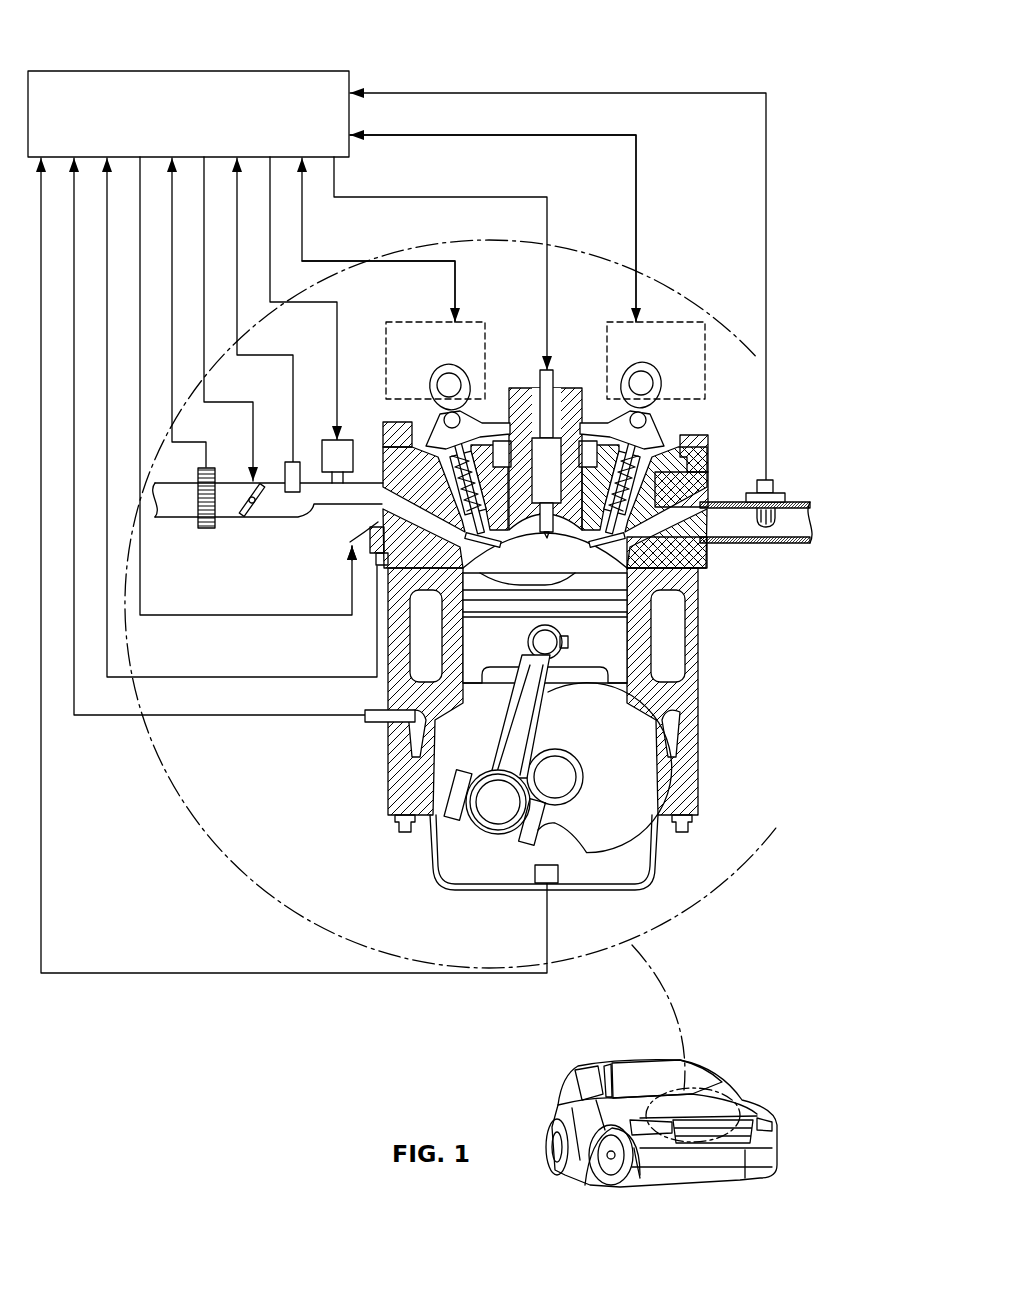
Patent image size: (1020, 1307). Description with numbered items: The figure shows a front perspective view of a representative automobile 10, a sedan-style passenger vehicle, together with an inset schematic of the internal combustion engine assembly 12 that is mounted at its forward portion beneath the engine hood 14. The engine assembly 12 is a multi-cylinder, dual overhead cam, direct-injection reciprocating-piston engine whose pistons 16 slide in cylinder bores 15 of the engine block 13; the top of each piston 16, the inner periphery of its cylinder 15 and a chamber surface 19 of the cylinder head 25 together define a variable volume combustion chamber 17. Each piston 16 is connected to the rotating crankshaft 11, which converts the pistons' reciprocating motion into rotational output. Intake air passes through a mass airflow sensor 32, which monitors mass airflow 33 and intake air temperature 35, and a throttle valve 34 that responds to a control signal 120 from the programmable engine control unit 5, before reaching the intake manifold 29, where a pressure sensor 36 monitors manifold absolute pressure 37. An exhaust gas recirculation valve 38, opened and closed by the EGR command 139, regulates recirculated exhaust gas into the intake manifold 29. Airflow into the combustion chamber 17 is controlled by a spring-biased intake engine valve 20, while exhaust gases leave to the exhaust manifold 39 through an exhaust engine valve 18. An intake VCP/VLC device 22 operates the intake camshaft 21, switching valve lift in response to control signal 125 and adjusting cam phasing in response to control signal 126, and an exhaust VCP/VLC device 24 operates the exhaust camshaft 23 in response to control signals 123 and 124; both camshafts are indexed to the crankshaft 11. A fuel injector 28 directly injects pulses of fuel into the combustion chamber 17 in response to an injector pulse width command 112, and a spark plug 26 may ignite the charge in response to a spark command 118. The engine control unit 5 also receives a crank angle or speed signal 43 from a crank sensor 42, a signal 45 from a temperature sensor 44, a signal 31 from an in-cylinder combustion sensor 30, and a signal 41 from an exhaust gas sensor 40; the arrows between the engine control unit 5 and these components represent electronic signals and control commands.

The programmable engine control unit 5 is at (182, 131).
The automobile 10 is at (718, 1040).
The crankshaft 11 is at (598, 830).
The internal combustion engine assembly 12 is at (138, 46).
The engine block 13 is at (678, 792).
The engine hood 14 is at (742, 1110).
The cylinder bore 15 is at (640, 612).
The piston 16 is at (612, 638).
The combustion chamber 17 is at (495, 570).
The exhaust engine valve 18 is at (725, 540).
The chamber surface 19 is at (630, 578).
The intake engine valve 20 is at (268, 514).
The intake camshaft 21 is at (433, 374).
The intake VCP/VLC device 22 is at (409, 353).
The exhaust camshaft 23 is at (645, 383).
The exhaust VCP/VLC device 24 is at (653, 353).
The cylinder head 25 is at (702, 468).
The spark plug 26 is at (553, 378).
The fuel injector 28 is at (348, 532).
The intake manifold 29 is at (393, 468).
The in-cylinder combustion sensor 30 is at (370, 565).
The combustion sensor signal 31 is at (222, 668).
The mass airflow sensor 32 is at (213, 530).
The mass airflow 33 is at (207, 312).
The throttle valve 34 is at (255, 512).
The intake air temperature 35 is at (177, 438).
The pressure sensor 36 is at (288, 462).
The manifold absolute pressure 37 is at (272, 346).
The exhaust gas recirculation valve 38 is at (325, 440).
The exhaust manifold 39 is at (730, 502).
The exhaust gas sensor 40 is at (777, 492).
The exhaust gas sensor signal 41 is at (725, 88).
The crank sensor 42 is at (558, 882).
The crank angle/speed signal 43 is at (232, 968).
The temperature sensor 44 is at (395, 723).
The temperature signal 45 is at (275, 711).
The injector pulse width command 112 is at (174, 608).
The spark command 118 is at (505, 190).
The throttle control signal 120 is at (224, 396).
The exhaust valve lift control signal 123 is at (505, 213).
The exhaust cam phasing control signal 124 is at (567, 131).
The intake valve lift control signal 125 is at (378, 240).
The intake cam phasing control signal 126 is at (335, 253).
The EGR command 139 is at (338, 296).